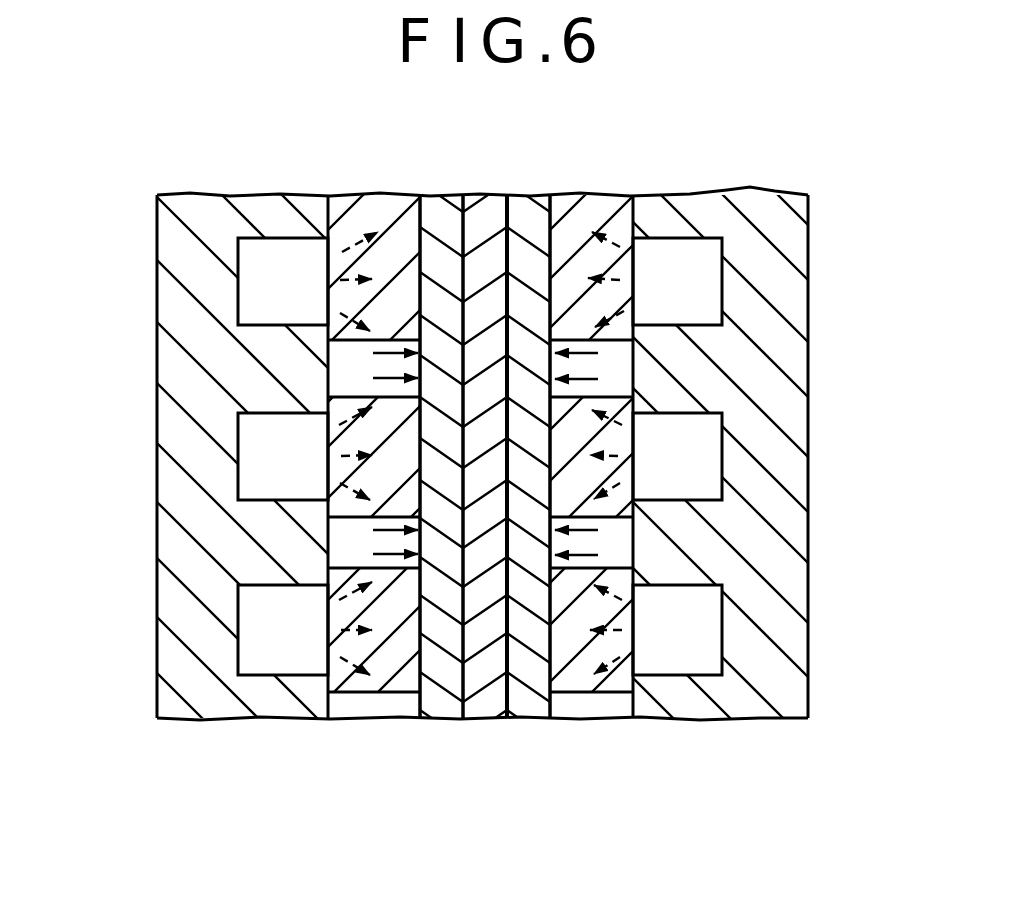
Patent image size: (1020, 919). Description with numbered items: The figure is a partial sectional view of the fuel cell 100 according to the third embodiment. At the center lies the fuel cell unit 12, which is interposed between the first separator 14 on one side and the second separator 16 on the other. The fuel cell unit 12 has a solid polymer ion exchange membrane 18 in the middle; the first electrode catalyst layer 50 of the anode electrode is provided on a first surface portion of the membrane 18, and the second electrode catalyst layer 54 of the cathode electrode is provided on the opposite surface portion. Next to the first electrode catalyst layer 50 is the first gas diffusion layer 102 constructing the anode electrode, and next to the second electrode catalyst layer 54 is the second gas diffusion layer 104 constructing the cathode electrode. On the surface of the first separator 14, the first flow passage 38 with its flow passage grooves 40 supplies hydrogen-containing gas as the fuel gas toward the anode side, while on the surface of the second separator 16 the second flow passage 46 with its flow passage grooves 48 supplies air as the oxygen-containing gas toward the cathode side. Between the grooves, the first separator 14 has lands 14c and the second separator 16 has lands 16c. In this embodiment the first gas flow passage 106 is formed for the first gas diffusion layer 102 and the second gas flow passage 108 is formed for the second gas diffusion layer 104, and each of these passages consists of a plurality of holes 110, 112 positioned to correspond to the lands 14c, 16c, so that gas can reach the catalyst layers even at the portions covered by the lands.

The fuel cell 100 is at (805, 92).
The fuel cell unit 12 is at (497, 472).
The first separator 14 is at (796, 189).
The second separator 16 is at (198, 189).
The solid polymer ion exchange membrane 18 is at (493, 194).
The first electrode catalyst layer 50 is at (530, 712).
The second electrode catalyst layer 54 is at (445, 712).
The first flow passage 38 is at (725, 287).
The flow passage grooves 40 is at (718, 470).
The second flow passage 46 is at (236, 283).
The flow passage grooves 48 is at (242, 465).
The lands 14c is at (633, 385).
The lands 16c is at (328, 377).
The first gas diffusion layer 102 is at (601, 191).
The second gas diffusion layer 104 is at (379, 189).
The first gas flow passage 106 is at (612, 723).
The second gas flow passage 108 is at (372, 711).
The holes 110 is at (633, 550).
The holes 112 is at (328, 548).